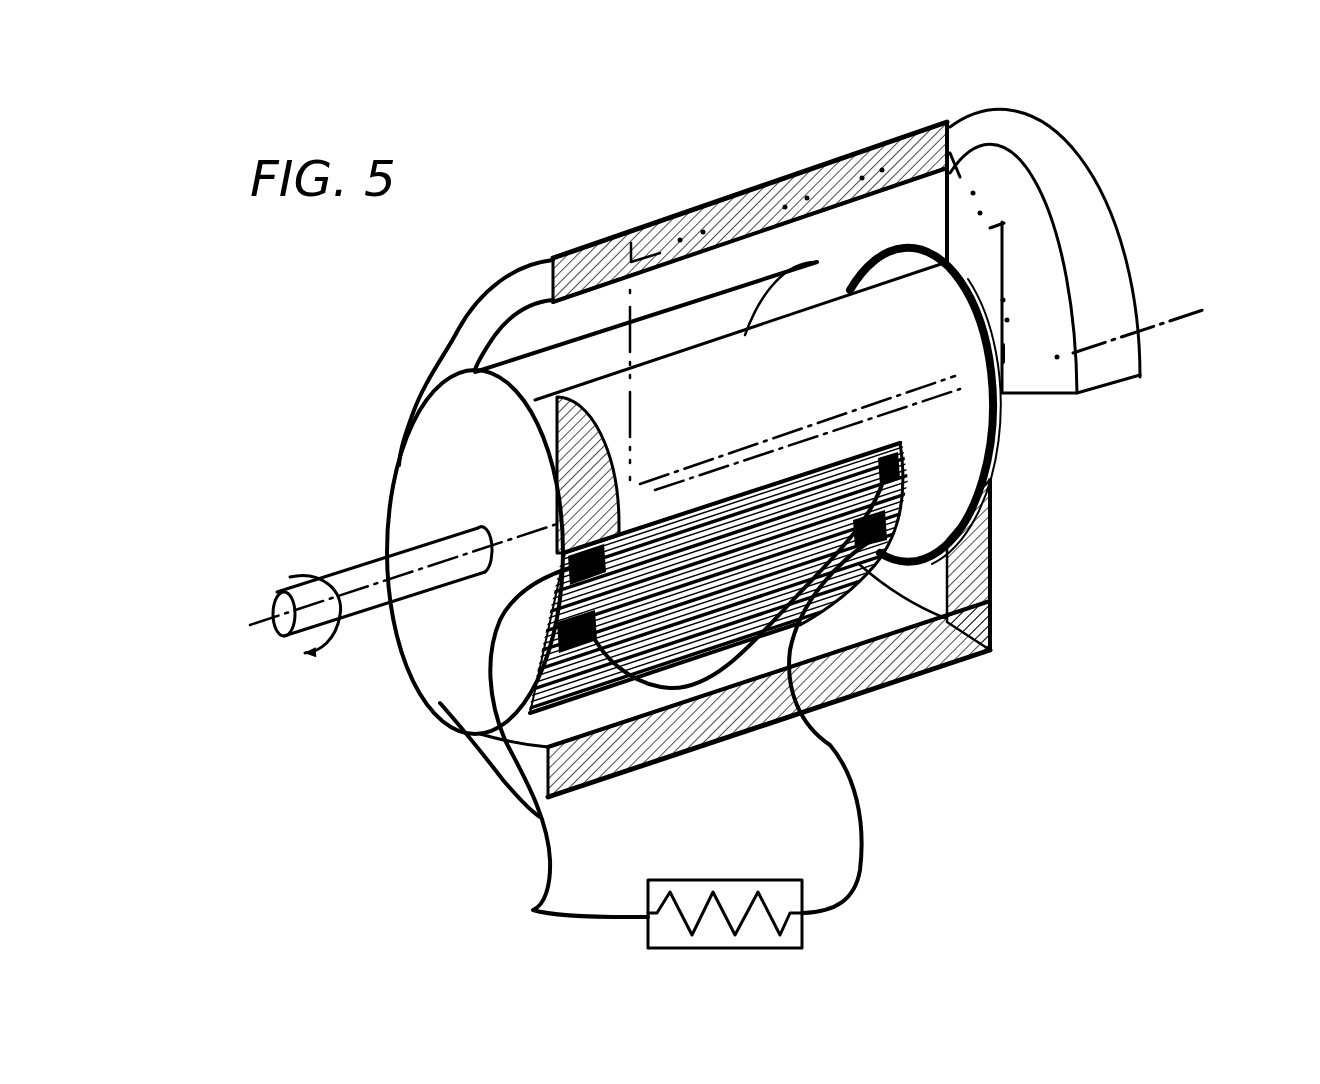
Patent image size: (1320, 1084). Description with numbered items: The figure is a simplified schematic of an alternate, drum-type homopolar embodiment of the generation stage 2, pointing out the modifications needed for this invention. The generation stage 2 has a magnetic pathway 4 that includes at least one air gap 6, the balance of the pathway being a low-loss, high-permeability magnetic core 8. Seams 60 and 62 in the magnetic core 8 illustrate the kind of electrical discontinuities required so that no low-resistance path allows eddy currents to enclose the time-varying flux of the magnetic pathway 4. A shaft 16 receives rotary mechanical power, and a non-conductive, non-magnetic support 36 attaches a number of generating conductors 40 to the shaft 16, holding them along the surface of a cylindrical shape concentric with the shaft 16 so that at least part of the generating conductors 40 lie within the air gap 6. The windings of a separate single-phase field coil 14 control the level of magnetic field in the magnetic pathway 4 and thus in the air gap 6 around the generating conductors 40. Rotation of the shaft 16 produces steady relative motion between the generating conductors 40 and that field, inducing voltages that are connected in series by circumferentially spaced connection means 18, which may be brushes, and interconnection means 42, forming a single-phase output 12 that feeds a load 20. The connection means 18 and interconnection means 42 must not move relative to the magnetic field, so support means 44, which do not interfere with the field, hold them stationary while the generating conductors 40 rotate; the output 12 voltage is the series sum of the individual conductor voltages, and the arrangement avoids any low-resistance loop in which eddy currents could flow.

The generation stage 2 is at (912, 130).
The magnetic pathway 4 is at (1007, 217).
The air gap 6 is at (590, 311).
The magnetic core 8 is at (575, 469).
The single phase output 12 is at (533, 835).
The field coil 14 is at (995, 458).
The shaft 16 is at (335, 562).
The interconnection means 18 is at (590, 646).
The load 20 is at (773, 870).
The non-conductive support 36 is at (737, 272).
The generating conductors 40 is at (588, 592).
The interconnection means 42 is at (825, 700).
The support means 44 is at (615, 748).
The seam 60 is at (952, 575).
The seam 62 is at (425, 413).